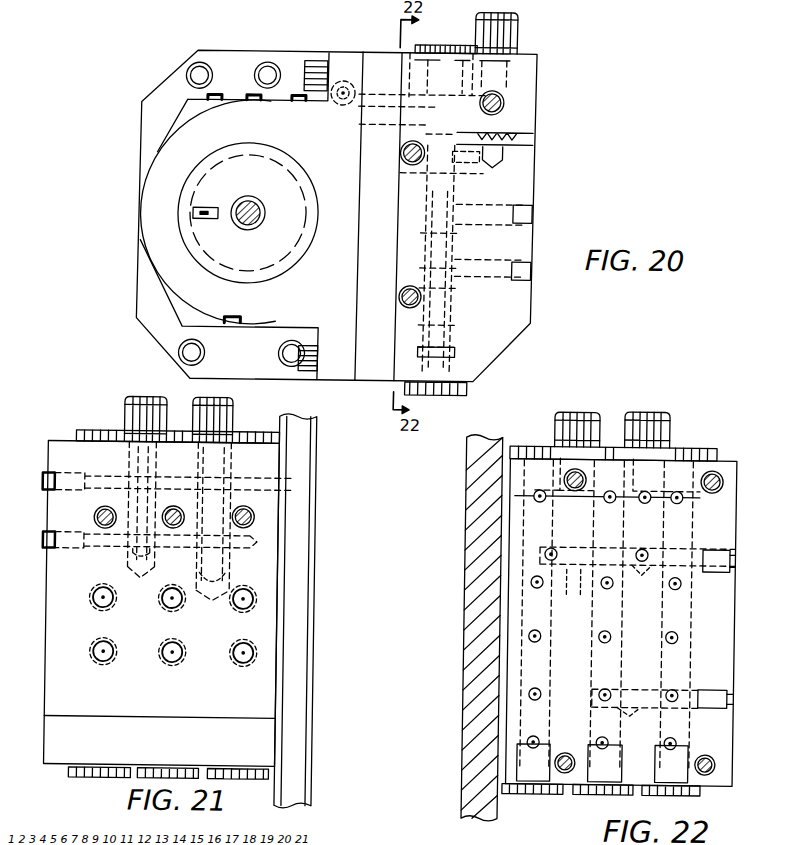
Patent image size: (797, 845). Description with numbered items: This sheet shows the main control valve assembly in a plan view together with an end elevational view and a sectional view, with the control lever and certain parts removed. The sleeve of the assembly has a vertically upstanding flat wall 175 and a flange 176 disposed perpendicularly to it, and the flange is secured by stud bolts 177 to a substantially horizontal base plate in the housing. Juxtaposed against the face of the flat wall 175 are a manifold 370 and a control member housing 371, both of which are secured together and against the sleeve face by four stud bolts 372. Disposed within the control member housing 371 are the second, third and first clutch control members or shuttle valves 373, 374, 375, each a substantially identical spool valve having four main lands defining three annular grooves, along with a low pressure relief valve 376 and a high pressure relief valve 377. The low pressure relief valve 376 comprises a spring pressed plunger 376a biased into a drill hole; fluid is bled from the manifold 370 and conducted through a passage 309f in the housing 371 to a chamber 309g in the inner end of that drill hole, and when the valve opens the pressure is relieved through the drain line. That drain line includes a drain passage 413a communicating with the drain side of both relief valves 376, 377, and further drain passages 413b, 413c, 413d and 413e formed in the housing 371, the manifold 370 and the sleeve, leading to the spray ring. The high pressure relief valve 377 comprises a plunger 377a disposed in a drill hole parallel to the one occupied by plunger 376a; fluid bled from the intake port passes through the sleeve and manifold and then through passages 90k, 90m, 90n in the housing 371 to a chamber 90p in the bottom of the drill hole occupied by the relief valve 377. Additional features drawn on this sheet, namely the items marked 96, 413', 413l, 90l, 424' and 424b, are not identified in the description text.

In FIG. 20, the flange 176 is at (146, 141).
In FIG. 20, the stud bolts 177 is at (186, 65).
In FIG. 20, the manifold 370 is at (399, 375).
In FIG. 20, the control member housing 371 is at (500, 343).
In FIG. 21, the control member housing 371 is at (73, 688).
In FIG. 20, the stud bolts 372 is at (316, 335).
In FIG. 22, the stud bolts 372 is at (711, 469).
In FIG. 20, the first clutch control member 375 is at (469, 393).
In FIG. 21, the first clutch control member 375 is at (116, 752).
In FIG. 21, the third clutch control member 374 is at (185, 752).
In FIG. 21, the second clutch control member 373 is at (252, 752).
In FIG. 21, the low pressure relief valve 376 is at (251, 391).
In FIG. 22, the low pressure relief valve 376 is at (577, 412).
In FIG. 20, the high pressure relief valve 377 is at (514, 26).
In FIG. 21, the high pressure relief valve 377 is at (127, 399).
In FIG. 22, the high pressure relief valve 377 is at (655, 411).
In FIG. 20, the flat wall 175 is at (359, 312).
In FIG. 20, the screw 96 is at (430, 123).
In FIG. 20, the screw 413' is at (531, 103).
In FIG. 20, the knurled strip 413l is at (404, 49).
In FIG. 20, the drain passage 413c is at (403, 93).
In FIG. 20, the drain passage 413d is at (347, 108).
In FIG. 21, the drain passage 413d is at (271, 493).
In FIG. 21, the drain passage 413b is at (125, 478).
In FIG. 21, the drain passage 413e is at (292, 492).
In FIG. 21, the drain passage 413a is at (175, 511).
In FIG. 21, the plunger 377a is at (108, 511).
In FIG. 21, the spring pressed plunger 376a is at (250, 512).
In FIG. 20, the passage 309f is at (407, 184).
In FIG. 21, the passage 309f is at (218, 573).
In FIG. 22, the passage 309f is at (590, 591).
In FIG. 21, the chamber 309g is at (215, 561).
In FIG. 21, the passage 90n is at (127, 550).
In FIG. 21, the chamber 90p is at (156, 565).
In FIG. 21, the passage 90m is at (163, 545).
In FIG. 22, the passage 90m is at (686, 575).
In FIG. 22, the passage 90k is at (552, 548).
In FIG. 22, the port 90l is at (635, 552).
In FIG. 22, the port 424' is at (681, 697).
In FIG. 22, the passage 424b is at (636, 712).